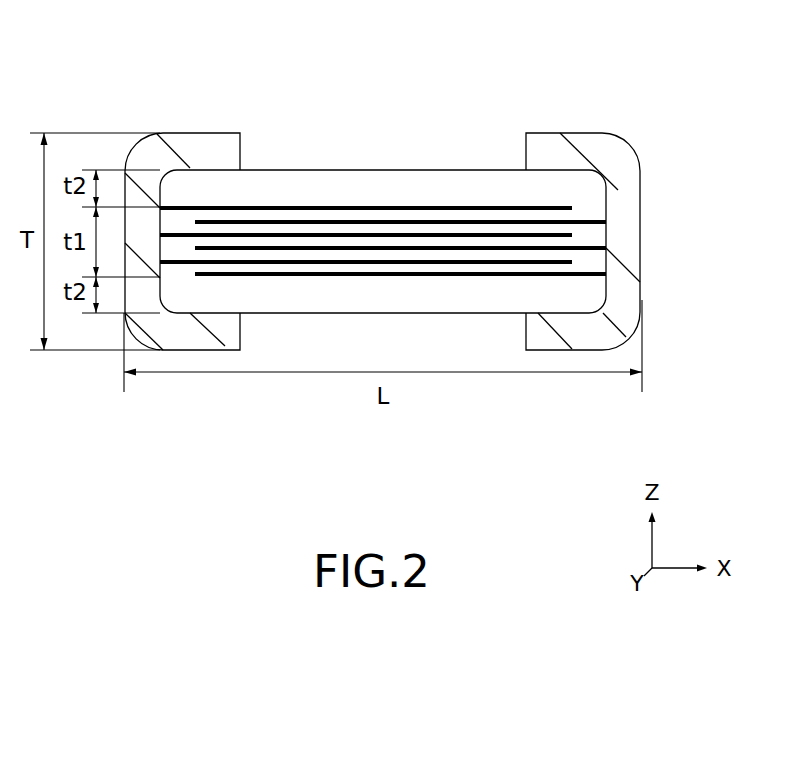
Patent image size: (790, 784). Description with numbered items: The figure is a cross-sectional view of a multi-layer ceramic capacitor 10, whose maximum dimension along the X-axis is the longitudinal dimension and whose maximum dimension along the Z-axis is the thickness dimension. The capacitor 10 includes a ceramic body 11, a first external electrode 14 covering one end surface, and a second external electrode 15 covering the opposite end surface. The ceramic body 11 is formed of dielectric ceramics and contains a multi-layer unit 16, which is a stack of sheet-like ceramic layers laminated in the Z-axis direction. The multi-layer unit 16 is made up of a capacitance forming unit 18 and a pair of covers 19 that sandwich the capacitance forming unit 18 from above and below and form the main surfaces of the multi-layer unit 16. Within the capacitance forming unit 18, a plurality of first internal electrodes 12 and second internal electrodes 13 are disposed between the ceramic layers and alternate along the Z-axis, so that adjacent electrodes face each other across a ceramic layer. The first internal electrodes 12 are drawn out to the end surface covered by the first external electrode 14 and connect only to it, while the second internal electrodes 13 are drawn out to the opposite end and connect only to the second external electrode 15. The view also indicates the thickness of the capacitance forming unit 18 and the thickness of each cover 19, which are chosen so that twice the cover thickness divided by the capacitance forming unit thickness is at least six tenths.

The multi-layer ceramic capacitor 10 is at (163, 58).
The ceramic body 11 is at (432, 128).
The first internal electrodes 12 is at (318, 260).
The second internal electrodes 13 is at (479, 272).
The first external electrode 14 is at (180, 150).
The second external electrode 15 is at (587, 143).
The multi-layer unit 16 is at (360, 184).
The capacitance forming unit 18 is at (613, 213).
The covers 19 is at (613, 312).